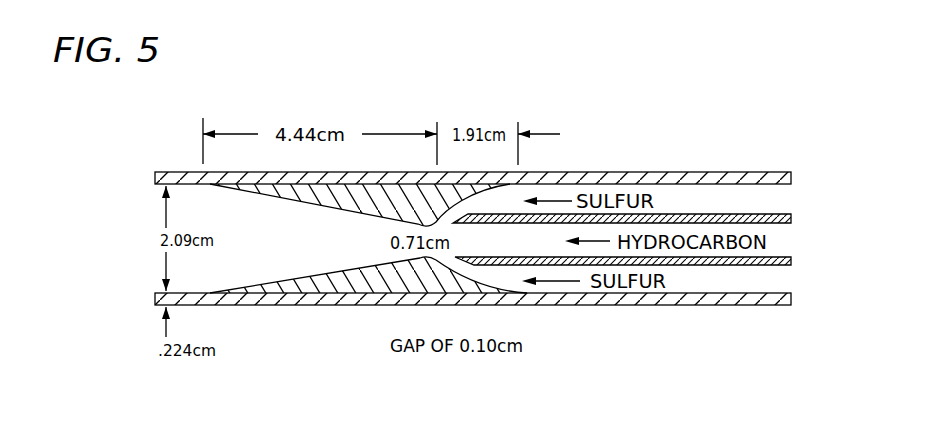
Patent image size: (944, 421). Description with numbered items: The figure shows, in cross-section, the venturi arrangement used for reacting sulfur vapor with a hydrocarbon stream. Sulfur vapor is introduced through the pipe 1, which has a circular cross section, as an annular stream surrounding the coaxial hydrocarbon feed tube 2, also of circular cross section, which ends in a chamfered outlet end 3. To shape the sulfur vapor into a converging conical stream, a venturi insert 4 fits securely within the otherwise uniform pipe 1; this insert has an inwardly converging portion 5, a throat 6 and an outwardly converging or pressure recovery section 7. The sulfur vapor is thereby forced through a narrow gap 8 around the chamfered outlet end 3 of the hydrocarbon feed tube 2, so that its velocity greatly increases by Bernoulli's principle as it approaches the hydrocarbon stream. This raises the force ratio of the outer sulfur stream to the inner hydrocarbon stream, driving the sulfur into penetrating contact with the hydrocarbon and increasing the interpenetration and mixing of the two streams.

The pipe 1 is at (592, 176).
The hydrocarbon feed tube 2 is at (755, 265).
The chamfered outlet end 3 is at (461, 212).
The venturi insert 4 is at (365, 276).
The inwardly converging portion 5 is at (538, 306).
The throat 6 is at (423, 257).
The outwardly converging section 7 is at (325, 198).
The narrow gap 8 is at (451, 262).